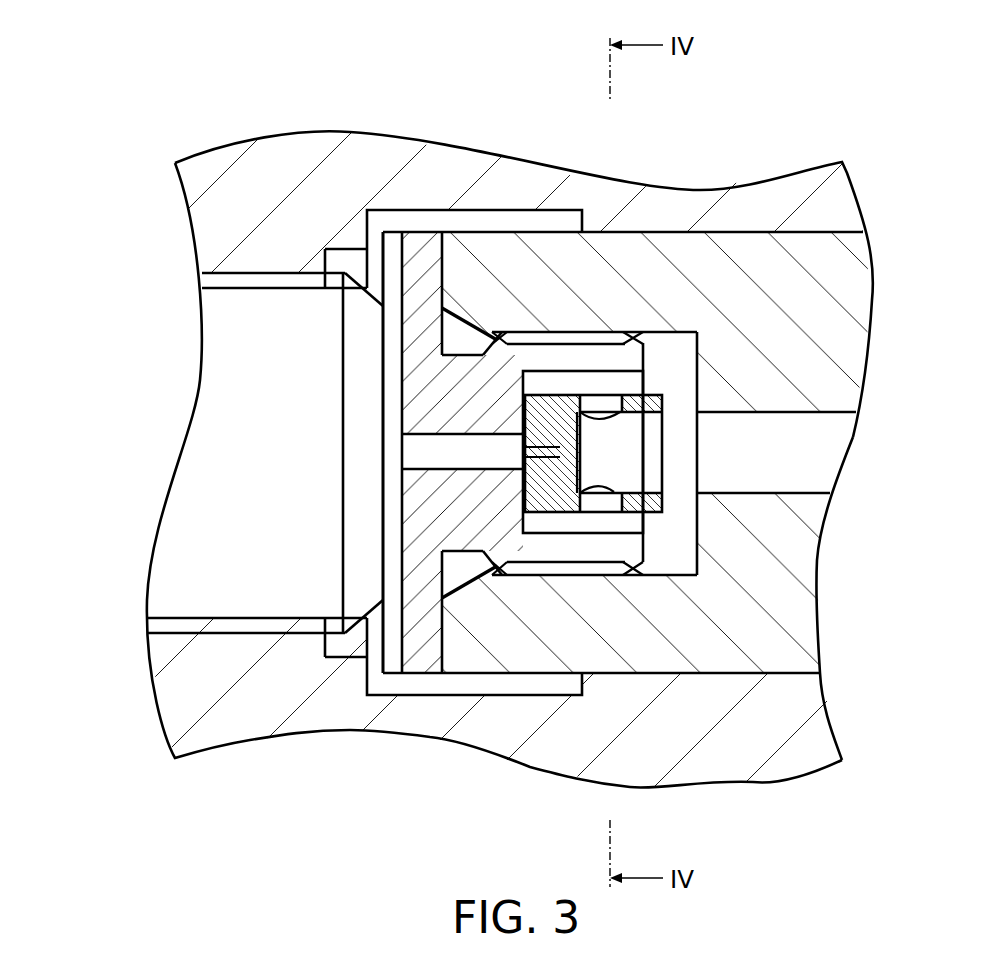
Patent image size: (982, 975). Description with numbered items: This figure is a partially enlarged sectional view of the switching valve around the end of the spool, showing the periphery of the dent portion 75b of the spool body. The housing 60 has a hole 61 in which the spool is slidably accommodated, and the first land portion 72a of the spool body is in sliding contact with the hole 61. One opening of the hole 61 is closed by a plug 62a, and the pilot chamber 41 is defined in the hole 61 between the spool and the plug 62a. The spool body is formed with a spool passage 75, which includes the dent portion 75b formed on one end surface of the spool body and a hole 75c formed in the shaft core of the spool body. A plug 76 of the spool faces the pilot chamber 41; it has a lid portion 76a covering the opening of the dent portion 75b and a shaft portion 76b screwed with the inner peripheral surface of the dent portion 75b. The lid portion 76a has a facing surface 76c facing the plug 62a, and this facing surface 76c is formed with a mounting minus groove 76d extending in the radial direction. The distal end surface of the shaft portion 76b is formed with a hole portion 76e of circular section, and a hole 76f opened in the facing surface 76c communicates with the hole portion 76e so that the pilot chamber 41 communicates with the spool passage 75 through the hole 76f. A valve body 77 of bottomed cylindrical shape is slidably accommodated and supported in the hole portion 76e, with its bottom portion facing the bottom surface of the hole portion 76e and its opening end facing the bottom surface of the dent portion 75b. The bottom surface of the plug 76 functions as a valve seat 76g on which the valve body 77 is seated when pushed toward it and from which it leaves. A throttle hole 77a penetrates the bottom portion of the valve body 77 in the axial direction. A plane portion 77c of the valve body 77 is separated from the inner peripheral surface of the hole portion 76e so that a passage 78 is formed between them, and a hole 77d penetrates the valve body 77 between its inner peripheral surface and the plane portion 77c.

The pilot chamber 41 is at (400, 213).
The housing 60 is at (228, 720).
The hole 61 is at (787, 673).
The plug 62a is at (188, 543).
The first land portion 72a is at (803, 352).
The spool passage 75 is at (832, 398).
The dent portion 75b is at (697, 572).
The hole 75c is at (813, 493).
The plug 76 is at (836, 224).
The lid portion 76a is at (427, 623).
The shaft portion 76b is at (547, 555).
The facing surface 76c is at (385, 590).
The mounting minus groove 76d is at (390, 605).
The hole portion 76e is at (612, 522).
The hole 76f is at (453, 468).
The valve seat 76g is at (530, 422).
The valve body 77 is at (533, 384).
The throttle hole 77a is at (578, 393).
The plane portion 77c is at (643, 347).
The hole 77d is at (620, 416).
The passage 78 is at (595, 385).